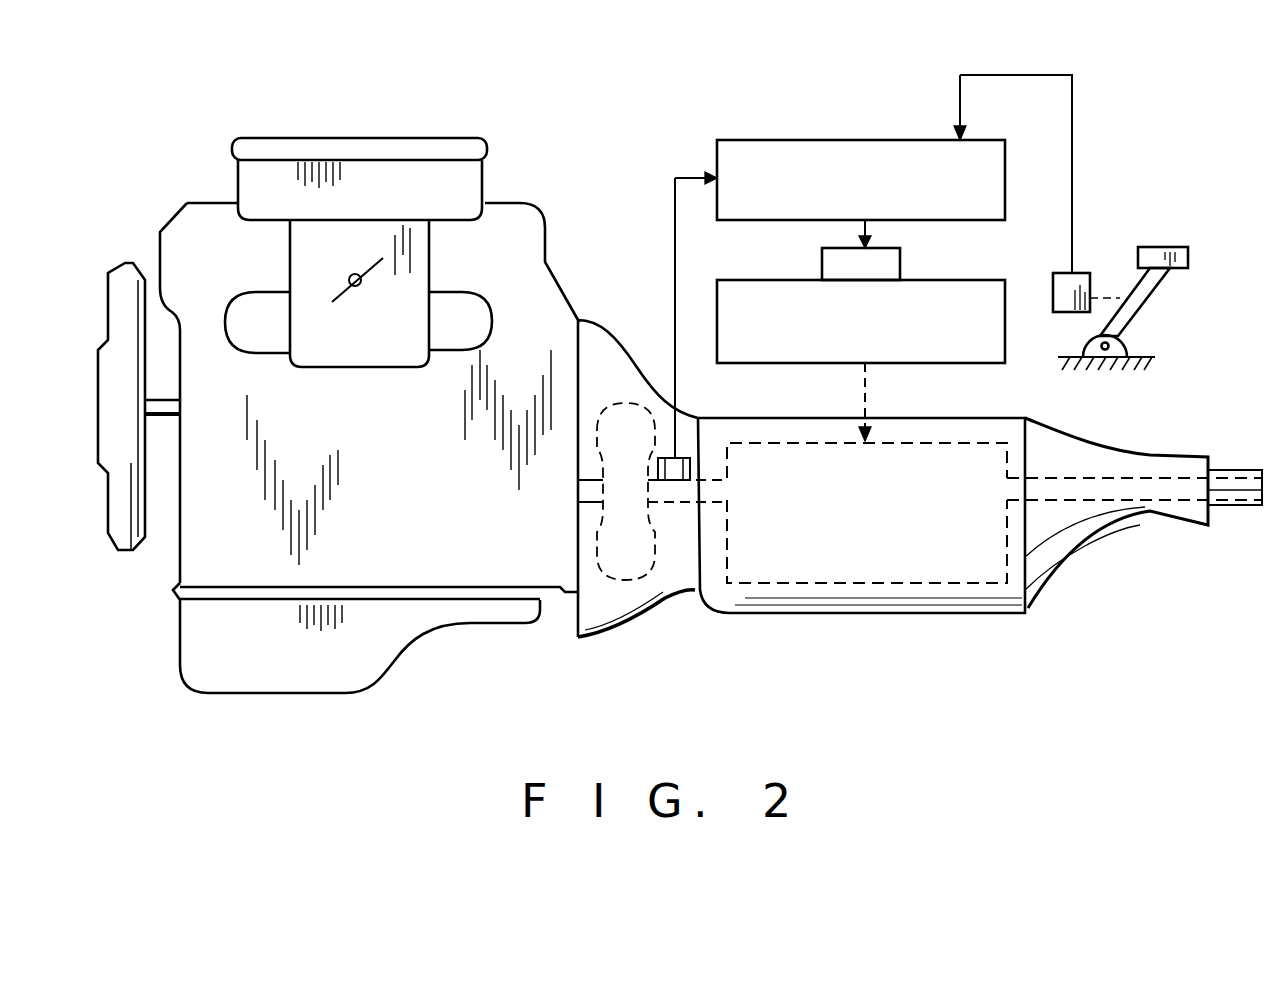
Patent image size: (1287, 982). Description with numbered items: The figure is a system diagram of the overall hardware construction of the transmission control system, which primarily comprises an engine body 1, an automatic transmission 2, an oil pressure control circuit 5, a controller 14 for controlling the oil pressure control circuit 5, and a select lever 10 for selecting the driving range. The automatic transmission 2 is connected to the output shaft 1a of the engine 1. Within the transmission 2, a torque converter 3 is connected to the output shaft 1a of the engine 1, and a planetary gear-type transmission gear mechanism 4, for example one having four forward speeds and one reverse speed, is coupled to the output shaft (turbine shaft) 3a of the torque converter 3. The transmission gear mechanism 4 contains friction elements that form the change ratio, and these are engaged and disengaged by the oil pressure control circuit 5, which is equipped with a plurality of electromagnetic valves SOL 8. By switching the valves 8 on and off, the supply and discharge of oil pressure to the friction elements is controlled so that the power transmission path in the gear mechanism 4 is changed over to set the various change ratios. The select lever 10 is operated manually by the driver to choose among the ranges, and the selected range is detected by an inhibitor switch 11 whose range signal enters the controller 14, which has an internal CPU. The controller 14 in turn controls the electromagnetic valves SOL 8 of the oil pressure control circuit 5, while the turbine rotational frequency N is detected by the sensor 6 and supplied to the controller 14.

The engine body 1 is at (197, 198).
The output shaft 1a is at (597, 503).
The automatic transmission 2 is at (751, 625).
The torque converter 3 is at (601, 588).
The output shaft (turbine shaft) 3a is at (677, 505).
The transmission gear mechanism 4 is at (860, 612).
The oil pressure control circuit 5 is at (938, 364).
The sensor 6 is at (687, 480).
The electromagnetic valves SOL 8 is at (905, 268).
The select lever 10 is at (1175, 276).
The inhibitor switch 11 is at (1065, 313).
The controller 14 is at (877, 138).